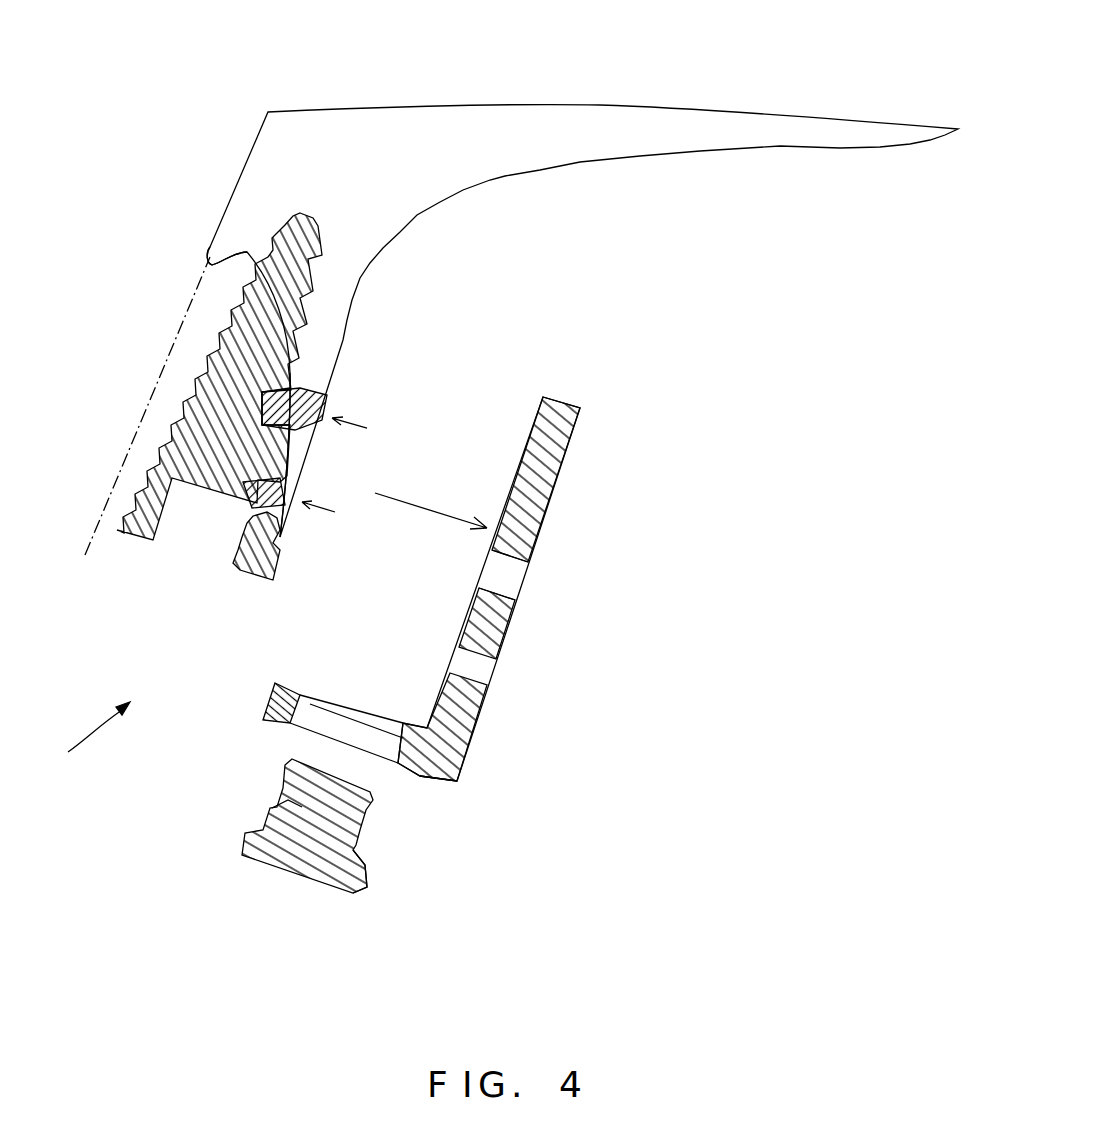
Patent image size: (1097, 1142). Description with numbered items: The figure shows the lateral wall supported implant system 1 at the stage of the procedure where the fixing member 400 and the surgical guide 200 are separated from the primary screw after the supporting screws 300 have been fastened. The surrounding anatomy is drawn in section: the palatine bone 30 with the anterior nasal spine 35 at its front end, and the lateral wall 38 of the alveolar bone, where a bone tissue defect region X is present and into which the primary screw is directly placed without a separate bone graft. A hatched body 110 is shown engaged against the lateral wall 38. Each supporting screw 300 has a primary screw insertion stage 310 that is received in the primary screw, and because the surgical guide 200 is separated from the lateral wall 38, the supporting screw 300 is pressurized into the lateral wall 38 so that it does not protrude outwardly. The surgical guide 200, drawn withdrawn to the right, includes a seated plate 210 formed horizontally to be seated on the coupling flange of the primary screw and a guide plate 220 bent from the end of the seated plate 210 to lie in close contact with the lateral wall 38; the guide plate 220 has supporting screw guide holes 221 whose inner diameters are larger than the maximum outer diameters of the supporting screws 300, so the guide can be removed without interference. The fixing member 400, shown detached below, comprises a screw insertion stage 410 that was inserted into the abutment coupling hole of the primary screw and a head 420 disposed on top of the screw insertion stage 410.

The lateral wall supported implant system 1 is at (58, 784).
The palatine bone 30 is at (628, 155).
The anterior nasal spine 35 is at (207, 267).
The lateral wall 38 is at (317, 443).
The bone tissue defect region X is at (143, 453).
The clamp body 110 is at (233, 322).
The supporting screw 300 is at (327, 383).
The primary screw insertion stage 310 is at (272, 398).
The surgical guide 200 is at (454, 632).
The seated plate 210 is at (420, 778).
The guide plate 220 is at (475, 730).
The supporting screw guide hole 221 is at (513, 577).
The fixing member 400 is at (250, 848).
The screw insertion stage 410 is at (272, 805).
The head 420 is at (300, 870).